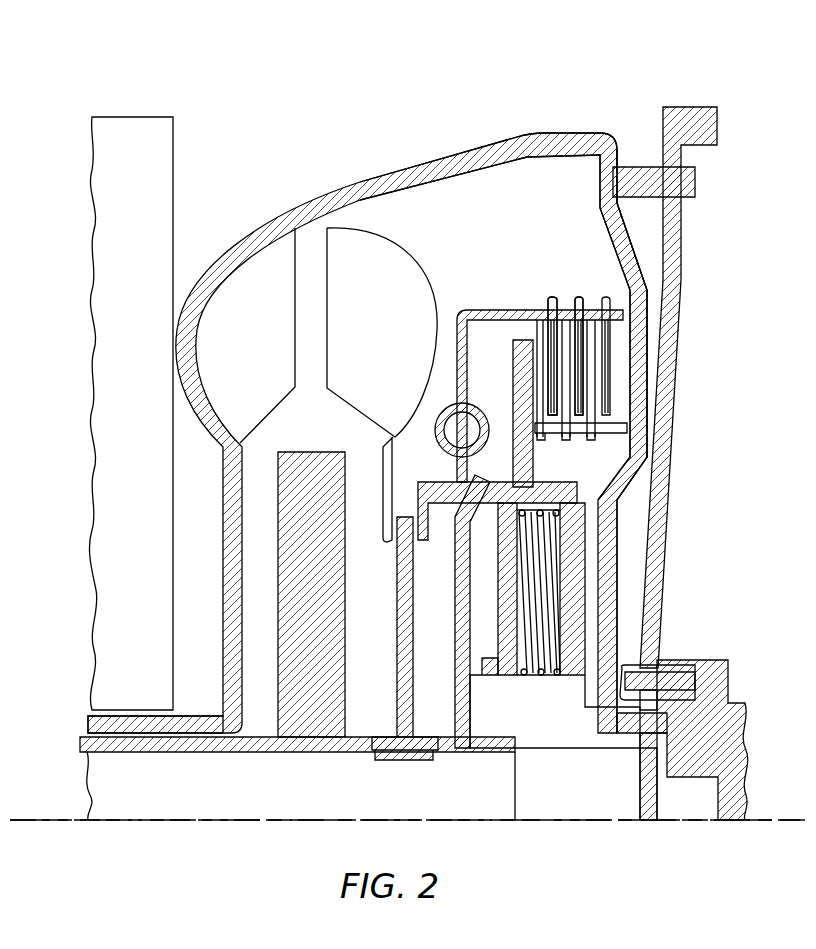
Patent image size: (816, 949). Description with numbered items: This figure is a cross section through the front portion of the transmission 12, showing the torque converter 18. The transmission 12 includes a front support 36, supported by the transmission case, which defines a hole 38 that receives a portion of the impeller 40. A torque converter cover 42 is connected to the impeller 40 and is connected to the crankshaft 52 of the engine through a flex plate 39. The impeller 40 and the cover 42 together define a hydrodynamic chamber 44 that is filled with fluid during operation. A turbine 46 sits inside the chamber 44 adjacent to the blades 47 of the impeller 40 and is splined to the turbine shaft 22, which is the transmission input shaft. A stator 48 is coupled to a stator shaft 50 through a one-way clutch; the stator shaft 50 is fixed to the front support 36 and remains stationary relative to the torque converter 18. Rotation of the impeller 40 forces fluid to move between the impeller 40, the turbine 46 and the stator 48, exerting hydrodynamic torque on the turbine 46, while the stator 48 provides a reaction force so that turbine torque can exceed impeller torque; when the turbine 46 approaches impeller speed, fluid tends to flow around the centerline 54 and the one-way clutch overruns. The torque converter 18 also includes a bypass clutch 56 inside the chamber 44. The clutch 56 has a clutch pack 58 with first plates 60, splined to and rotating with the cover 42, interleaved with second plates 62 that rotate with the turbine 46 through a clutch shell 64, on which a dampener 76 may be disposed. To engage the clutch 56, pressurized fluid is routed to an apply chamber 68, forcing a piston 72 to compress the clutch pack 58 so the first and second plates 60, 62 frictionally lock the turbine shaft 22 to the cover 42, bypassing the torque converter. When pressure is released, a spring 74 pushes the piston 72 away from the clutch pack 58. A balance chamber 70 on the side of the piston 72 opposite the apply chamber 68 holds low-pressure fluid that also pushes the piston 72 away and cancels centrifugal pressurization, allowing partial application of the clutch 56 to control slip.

The transmission 12 is at (700, 38).
The torque converter 18 is at (601, 118).
The turbine shaft 22 is at (515, 795).
The front support 36 is at (150, 448).
The hole 38 is at (80, 728).
The flex plate 39 is at (680, 435).
The impeller 40 is at (258, 222).
The torque converter cover 42 is at (512, 133).
The hydrodynamic chamber 44 is at (496, 217).
The turbine 46 is at (384, 340).
The blades 47 is at (292, 345).
The stator 48 is at (316, 452).
The stator shaft 50 is at (80, 742).
The crankshaft 52 is at (710, 660).
The centerline 54 is at (40, 822).
The bypass clutch 56 is at (580, 278).
The clutch pack 58 is at (547, 305).
The first plates 60 is at (540, 438).
The second plates 62 is at (553, 297).
The clutch shell 64 is at (540, 396).
The apply chamber 68 is at (490, 561).
The balance chamber 70 is at (550, 612).
The piston 72 is at (517, 418).
The spring 74 is at (552, 512).
The dampener 76 is at (433, 433).